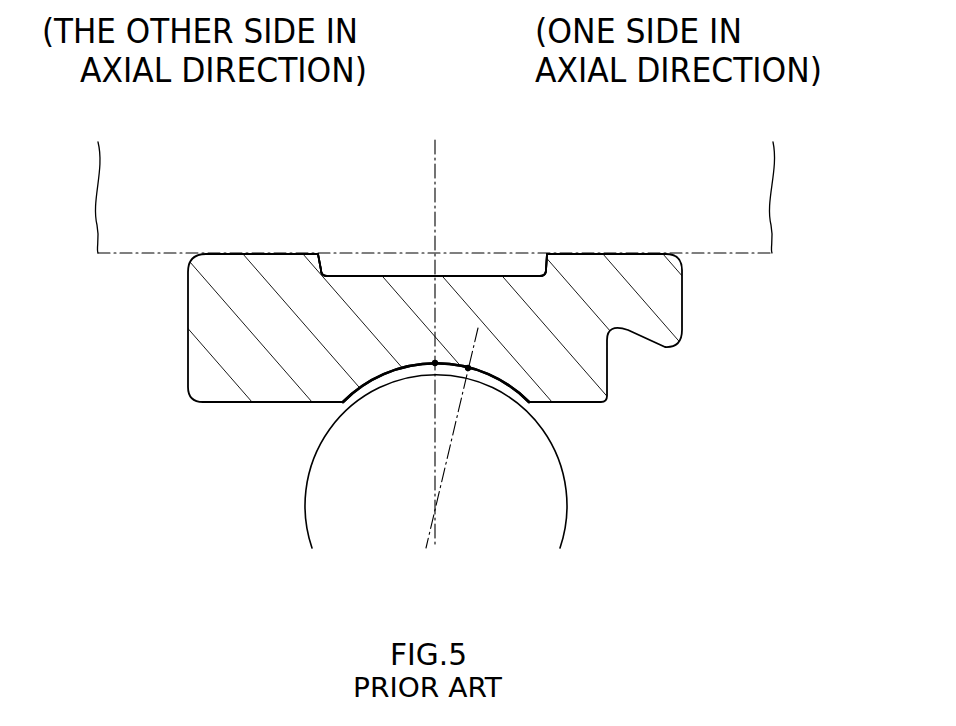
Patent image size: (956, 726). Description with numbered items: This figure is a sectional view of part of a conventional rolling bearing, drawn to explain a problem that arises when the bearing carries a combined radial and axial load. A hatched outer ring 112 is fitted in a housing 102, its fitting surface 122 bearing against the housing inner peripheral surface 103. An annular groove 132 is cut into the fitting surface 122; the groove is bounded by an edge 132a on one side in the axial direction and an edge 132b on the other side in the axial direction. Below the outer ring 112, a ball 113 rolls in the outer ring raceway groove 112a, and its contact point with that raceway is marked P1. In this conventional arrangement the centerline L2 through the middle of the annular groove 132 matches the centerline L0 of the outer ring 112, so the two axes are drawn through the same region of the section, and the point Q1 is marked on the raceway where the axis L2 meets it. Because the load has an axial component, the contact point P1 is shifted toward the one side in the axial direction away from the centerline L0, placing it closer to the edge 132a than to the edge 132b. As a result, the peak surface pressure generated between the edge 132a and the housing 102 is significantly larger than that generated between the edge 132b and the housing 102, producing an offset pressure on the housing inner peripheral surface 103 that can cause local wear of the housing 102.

The housing 102 is at (732, 237).
The housing inner peripheral surface 103 is at (120, 256).
The outer ring 112 is at (203, 348).
The outer ring raceway groove 112a is at (387, 392).
The ball 113 is at (310, 478).
The fitting surface 122 is at (252, 253).
The annular groove 132 is at (500, 275).
The edge on one side in the axial direction of the annular groove 132a is at (547, 258).
The edge on the other side in the axial direction of the annular groove 132b is at (321, 253).
The centerline of the annular groove L2 is at (435, 175).
The centerline of the outer ring L0 is at (440, 466).
The point on axis Q1 is at (435, 366).
The contact point P1 is at (468, 371).